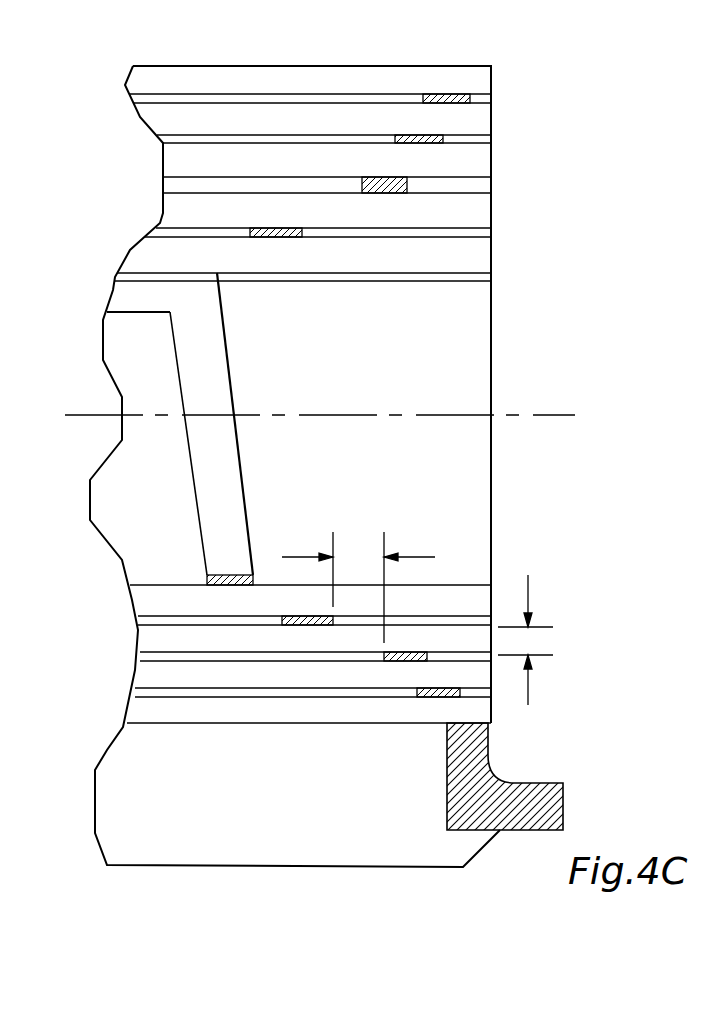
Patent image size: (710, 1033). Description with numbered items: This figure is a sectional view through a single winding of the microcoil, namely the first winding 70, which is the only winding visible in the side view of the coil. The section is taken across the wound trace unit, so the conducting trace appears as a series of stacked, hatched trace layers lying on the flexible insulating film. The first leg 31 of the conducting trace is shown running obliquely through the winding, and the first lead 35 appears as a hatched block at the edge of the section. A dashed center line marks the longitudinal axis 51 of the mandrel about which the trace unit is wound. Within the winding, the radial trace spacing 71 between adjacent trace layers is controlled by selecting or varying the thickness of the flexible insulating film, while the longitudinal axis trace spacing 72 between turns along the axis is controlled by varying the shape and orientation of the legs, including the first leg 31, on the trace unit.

The first winding 70 is at (537, 40).
The first leg 31 is at (212, 340).
The longitudinal axis 51 is at (560, 415).
The longitudinal axis trace spacing 72 is at (422, 557).
The radial trace spacing 71 is at (529, 592).
The first lead 35 is at (544, 790).